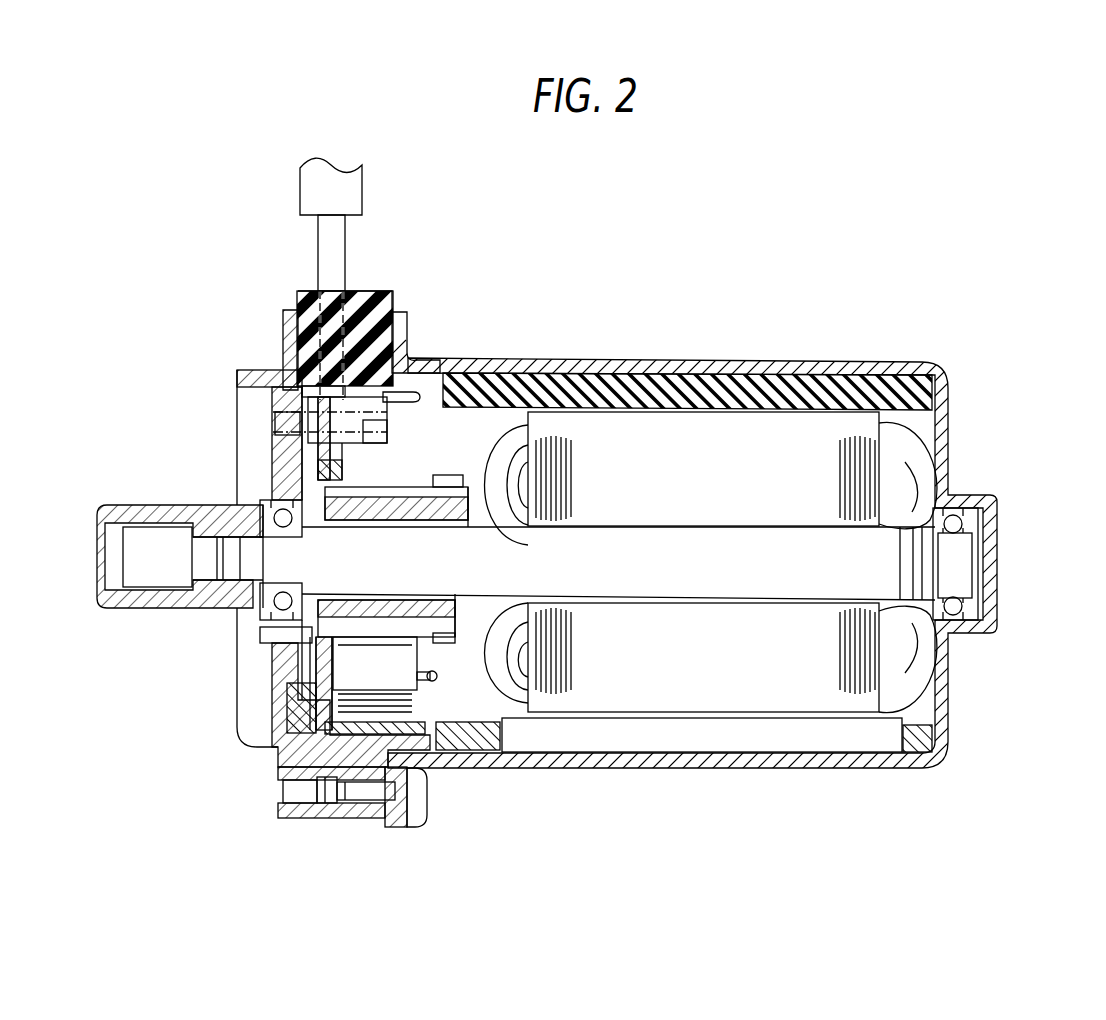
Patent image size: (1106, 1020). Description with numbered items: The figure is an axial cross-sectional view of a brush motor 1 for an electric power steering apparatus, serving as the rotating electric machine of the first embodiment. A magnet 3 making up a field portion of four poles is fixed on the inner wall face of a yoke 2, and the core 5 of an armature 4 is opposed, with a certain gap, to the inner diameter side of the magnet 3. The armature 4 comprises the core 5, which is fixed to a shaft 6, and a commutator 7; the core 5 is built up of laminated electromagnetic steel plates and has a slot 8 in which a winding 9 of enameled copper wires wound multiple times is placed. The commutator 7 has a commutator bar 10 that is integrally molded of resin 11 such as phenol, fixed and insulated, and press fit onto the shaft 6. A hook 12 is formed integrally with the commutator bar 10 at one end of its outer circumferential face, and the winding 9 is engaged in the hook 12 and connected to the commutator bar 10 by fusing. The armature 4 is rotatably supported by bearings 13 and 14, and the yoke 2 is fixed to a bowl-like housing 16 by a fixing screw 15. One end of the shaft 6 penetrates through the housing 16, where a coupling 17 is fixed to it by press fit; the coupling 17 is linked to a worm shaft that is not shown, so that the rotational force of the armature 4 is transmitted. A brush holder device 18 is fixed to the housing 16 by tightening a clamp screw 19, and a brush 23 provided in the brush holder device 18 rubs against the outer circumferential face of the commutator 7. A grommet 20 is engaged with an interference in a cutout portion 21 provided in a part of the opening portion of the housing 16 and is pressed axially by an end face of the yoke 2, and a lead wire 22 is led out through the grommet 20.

The brush motor 1 is at (636, 312).
The yoke 2 is at (700, 362).
The magnet 3 is at (810, 740).
The armature 4 is at (747, 412).
The core 5 is at (848, 430).
The shaft 6 is at (885, 565).
The commutator 7 is at (437, 485).
The slot 8 is at (900, 440).
The winding 9 is at (895, 678).
The commutator bar 10 is at (405, 485).
The resin 11 is at (440, 625).
The hook 12 is at (470, 478).
The bearing 13 is at (262, 505).
The bearing 14 is at (963, 620).
The fixing screw 15 is at (413, 805).
The housing 16 is at (293, 332).
The coupling 17 is at (120, 610).
The brush holder device 18 is at (430, 760).
The clamp screw 19 is at (385, 417).
The grommet 20 is at (365, 300).
The cutout portion 21 is at (293, 361).
The lead wire 22 is at (330, 245).
The brush 23 is at (350, 665).